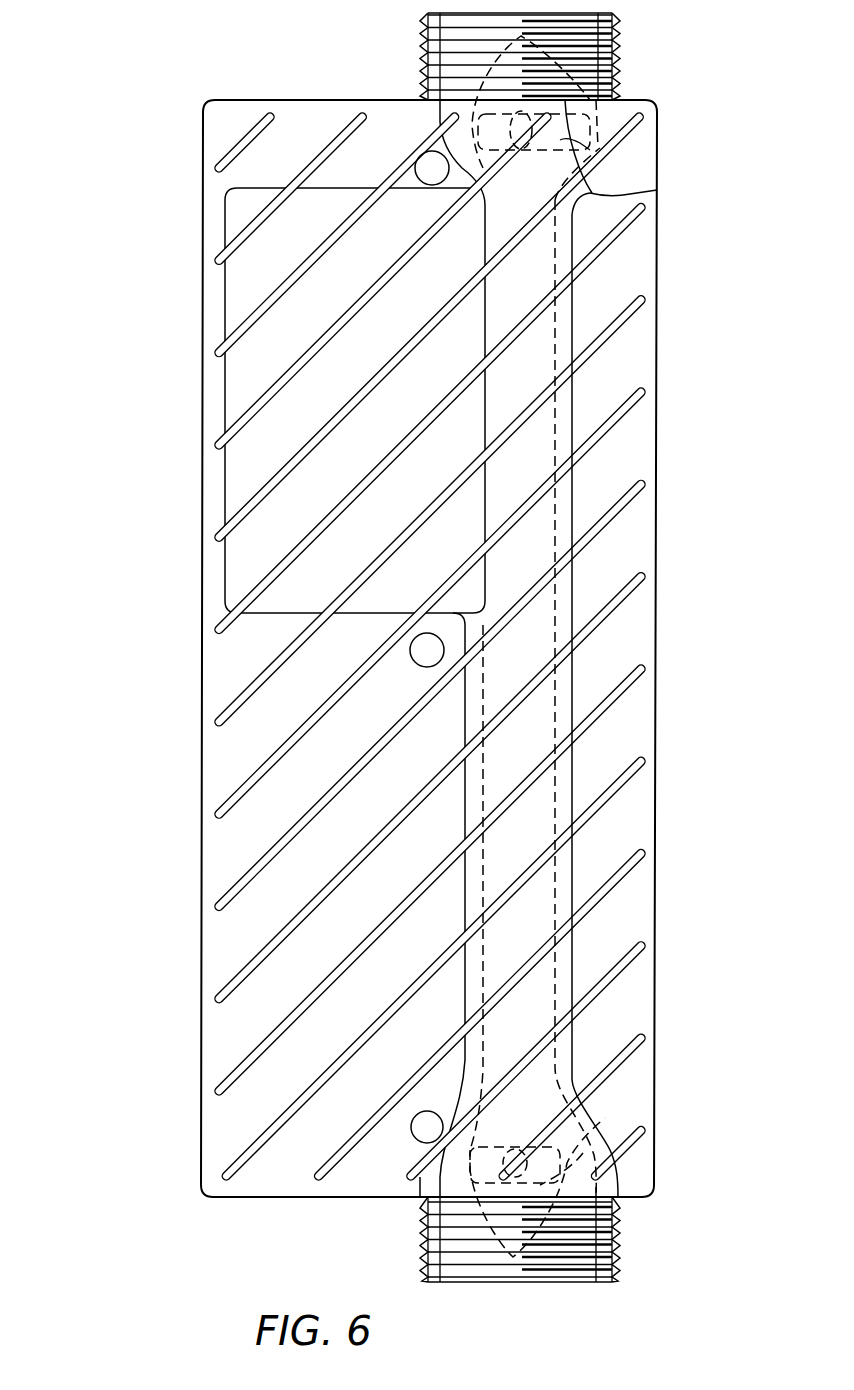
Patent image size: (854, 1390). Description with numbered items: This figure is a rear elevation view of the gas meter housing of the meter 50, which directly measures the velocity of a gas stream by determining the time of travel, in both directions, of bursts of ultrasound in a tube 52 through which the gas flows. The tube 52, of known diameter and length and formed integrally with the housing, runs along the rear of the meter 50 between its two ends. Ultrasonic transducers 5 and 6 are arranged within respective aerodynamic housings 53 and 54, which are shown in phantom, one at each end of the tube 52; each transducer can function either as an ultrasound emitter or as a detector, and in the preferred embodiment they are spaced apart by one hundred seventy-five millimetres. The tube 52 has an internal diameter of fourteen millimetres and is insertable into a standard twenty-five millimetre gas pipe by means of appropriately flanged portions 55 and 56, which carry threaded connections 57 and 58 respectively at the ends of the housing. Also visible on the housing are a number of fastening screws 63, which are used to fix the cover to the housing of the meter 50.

The meter 50 is at (165, 972).
The tube 52 is at (577, 590).
The aerodynamic housing 53 is at (583, 1153).
The aerodynamic housing 54 is at (593, 152).
The flanged portion 55 is at (587, 1115).
The flanged portion 56 is at (657, 190).
The threaded connection 57 is at (620, 1240).
The threaded connection 58 is at (620, 60).
The ultrasonic transducer 5 is at (560, 1170).
The ultrasonic transducer 6 is at (540, 128).
The fastening screws 63 is at (432, 168).